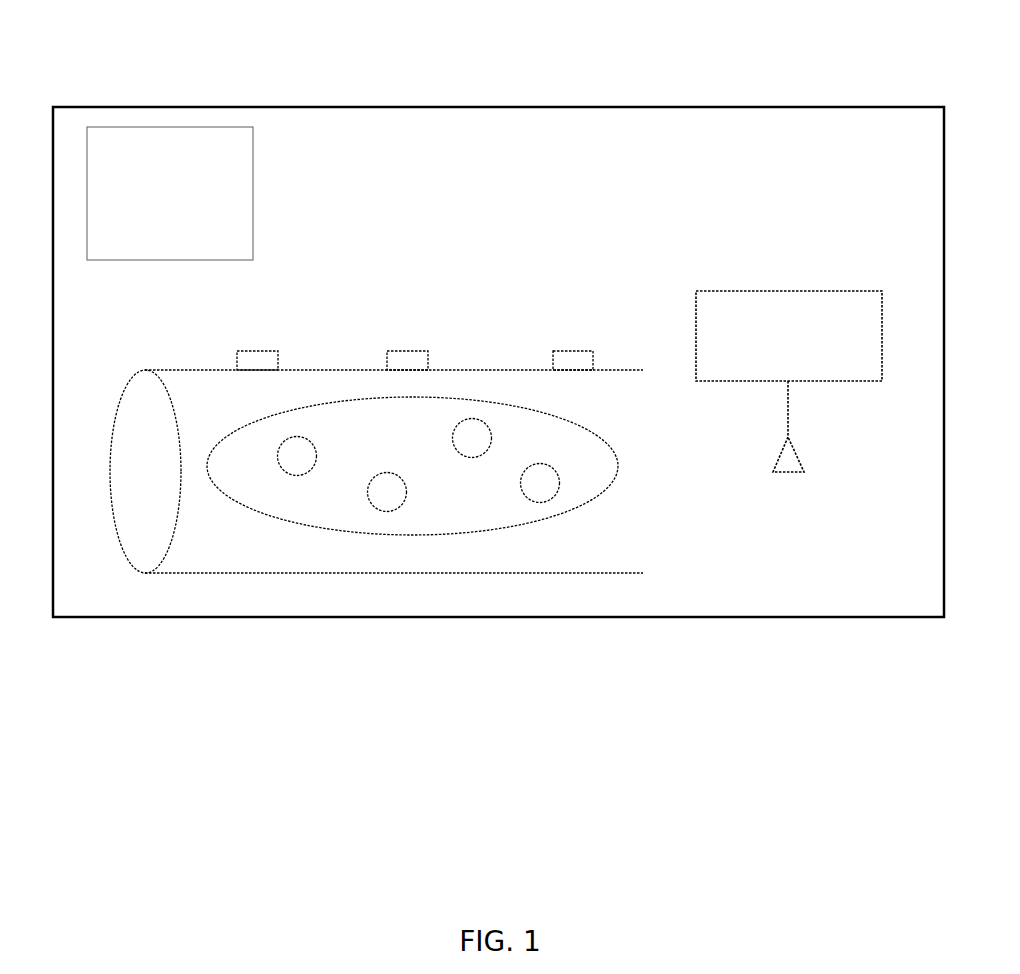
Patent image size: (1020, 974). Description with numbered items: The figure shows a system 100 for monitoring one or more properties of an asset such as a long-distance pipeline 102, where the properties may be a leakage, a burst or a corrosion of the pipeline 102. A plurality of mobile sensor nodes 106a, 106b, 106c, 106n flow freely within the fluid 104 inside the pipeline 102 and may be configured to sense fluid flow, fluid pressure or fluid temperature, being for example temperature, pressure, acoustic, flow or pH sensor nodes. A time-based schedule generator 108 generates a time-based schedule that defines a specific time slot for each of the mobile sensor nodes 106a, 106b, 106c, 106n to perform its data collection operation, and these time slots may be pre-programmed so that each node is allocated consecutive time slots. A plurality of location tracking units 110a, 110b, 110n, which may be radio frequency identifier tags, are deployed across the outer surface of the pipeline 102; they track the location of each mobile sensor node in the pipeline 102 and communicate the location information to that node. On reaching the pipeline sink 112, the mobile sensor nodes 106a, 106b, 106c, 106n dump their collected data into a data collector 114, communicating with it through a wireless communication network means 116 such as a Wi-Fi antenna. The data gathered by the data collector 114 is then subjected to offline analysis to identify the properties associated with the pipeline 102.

The system 100 is at (448, 88).
The long-distance pipeline 102 is at (210, 560).
The fluid 104 is at (240, 488).
The mobile sensor node 106a is at (336, 441).
The mobile sensor node 106b is at (403, 470).
The mobile sensor node 106c is at (504, 417).
The mobile sensor node 106n is at (568, 454).
The time-based schedule generator 108 is at (156, 190).
The location tracking unit 110a is at (286, 322).
The location tracking unit 110b is at (431, 322).
The location tracking unit 110n is at (595, 322).
The pipeline sink 112 is at (646, 488).
The data collector 114 is at (789, 298).
The wireless communication network means 116 is at (772, 464).